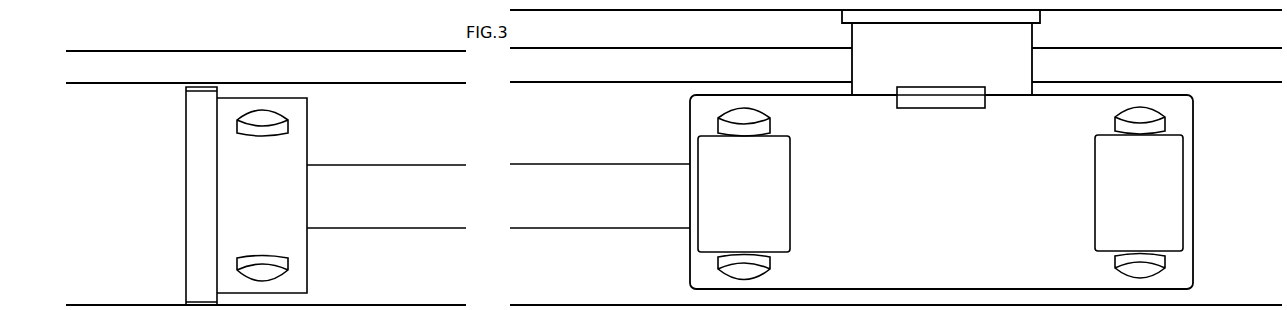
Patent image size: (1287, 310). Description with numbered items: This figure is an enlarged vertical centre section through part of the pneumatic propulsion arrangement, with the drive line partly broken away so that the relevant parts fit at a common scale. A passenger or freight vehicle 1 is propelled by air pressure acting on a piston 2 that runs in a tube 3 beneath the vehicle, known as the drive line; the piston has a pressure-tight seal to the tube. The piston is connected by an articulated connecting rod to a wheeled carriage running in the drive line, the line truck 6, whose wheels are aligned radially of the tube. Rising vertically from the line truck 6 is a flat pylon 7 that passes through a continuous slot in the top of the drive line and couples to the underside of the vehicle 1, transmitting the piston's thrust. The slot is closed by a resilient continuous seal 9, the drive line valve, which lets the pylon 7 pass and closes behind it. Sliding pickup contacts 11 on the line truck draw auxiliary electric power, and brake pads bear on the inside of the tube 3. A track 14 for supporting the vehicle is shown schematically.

The passenger or freight vehicle 1 is at (695, 12).
The piston 2 is at (193, 190).
The tube 3 is at (588, 302).
The line truck 6 is at (941, 192).
The pylon 7 is at (989, 62).
The continuous seal 9 is at (680, 80).
The sliding pickup contacts 11 is at (948, 108).
The track 14 is at (777, 47).